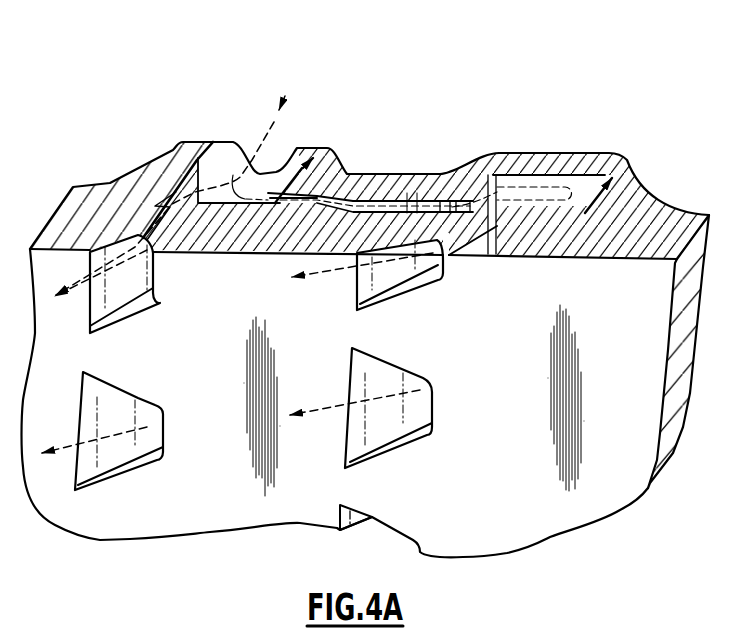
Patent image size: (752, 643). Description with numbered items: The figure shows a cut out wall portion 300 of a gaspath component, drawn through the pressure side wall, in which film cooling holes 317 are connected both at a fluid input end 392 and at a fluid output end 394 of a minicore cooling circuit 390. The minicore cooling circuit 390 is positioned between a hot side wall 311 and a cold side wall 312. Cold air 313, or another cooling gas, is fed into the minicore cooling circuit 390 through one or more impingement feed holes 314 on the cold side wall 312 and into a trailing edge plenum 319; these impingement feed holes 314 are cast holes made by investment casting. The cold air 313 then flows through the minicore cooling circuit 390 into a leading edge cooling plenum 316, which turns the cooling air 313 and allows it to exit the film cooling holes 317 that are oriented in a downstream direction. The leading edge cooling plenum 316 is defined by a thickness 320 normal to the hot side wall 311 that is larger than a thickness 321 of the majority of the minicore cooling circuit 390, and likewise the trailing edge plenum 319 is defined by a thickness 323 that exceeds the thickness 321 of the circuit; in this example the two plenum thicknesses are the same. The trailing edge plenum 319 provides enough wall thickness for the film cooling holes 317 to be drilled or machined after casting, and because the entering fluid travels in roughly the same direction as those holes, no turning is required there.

The cut out wall portion 300 is at (462, 82).
The hot side wall 311 is at (225, 500).
The cold side wall 312 is at (375, 197).
The cold air 313 is at (271, 126).
The impingement feed holes 314 is at (244, 158).
The leading edge cooling plenum 316 is at (578, 190).
The film cooling holes 317 is at (137, 297).
The trailing edge plenum 319 is at (228, 155).
The thickness of the leading edge cooling plenum 320 is at (630, 200).
The thickness of the minicore cooling circuit 321 is at (447, 200).
The thickness of the trailing edge plenum 323 is at (348, 175).
The minicore cooling circuit 390 is at (413, 197).
The fluid input end 392 is at (172, 186).
The fluid output end 394 is at (634, 202).